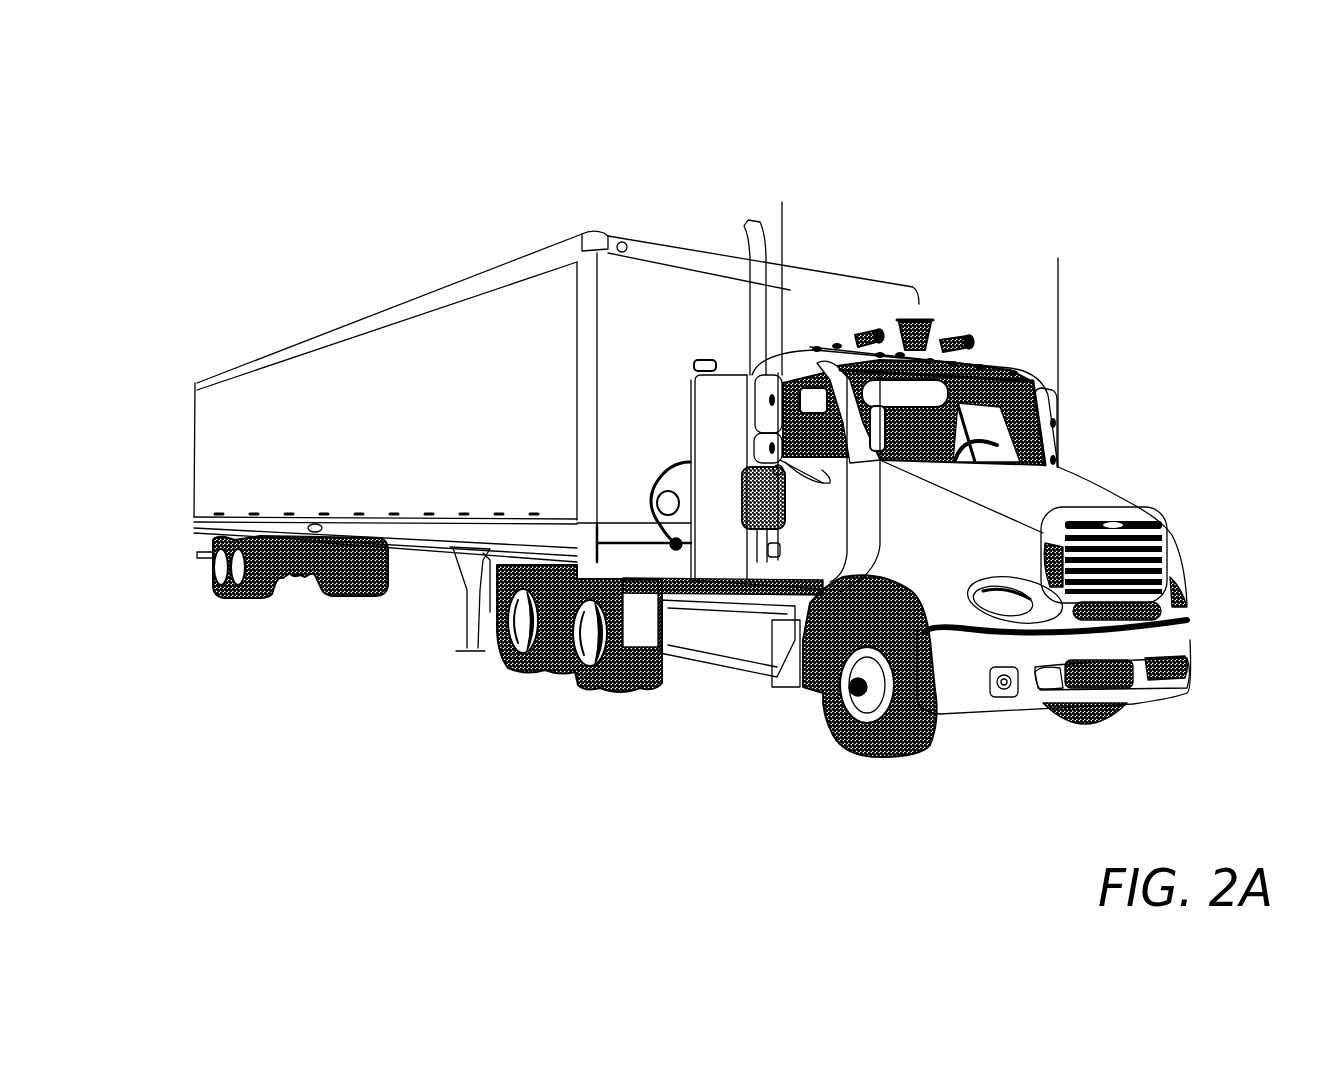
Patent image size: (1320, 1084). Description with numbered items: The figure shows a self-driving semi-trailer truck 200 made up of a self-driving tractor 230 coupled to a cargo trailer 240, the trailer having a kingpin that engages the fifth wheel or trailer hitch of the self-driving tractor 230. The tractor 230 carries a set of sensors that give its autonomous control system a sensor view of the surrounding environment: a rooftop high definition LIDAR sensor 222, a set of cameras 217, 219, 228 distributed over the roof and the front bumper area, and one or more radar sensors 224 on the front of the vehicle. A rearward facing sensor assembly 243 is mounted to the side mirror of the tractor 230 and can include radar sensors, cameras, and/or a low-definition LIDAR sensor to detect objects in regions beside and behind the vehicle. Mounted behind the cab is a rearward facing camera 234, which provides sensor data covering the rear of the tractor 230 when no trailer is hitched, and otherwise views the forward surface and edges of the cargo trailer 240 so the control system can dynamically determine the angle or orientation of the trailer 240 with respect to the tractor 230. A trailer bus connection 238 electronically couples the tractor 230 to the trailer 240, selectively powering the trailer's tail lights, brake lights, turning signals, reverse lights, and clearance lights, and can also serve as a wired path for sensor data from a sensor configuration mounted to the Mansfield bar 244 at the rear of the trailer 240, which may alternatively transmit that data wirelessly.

The self-driving semi-trailer truck 200 is at (845, 134).
The camera 217 is at (873, 327).
The camera 219 is at (958, 337).
The rooftop high definition LIDAR sensor 222 is at (910, 320).
The radar sensor 224 is at (1000, 690).
The camera 228 is at (1192, 722).
The self-driving tractor 230 is at (1192, 533).
The rearward facing camera 234 is at (705, 358).
The trailer bus connection 238 is at (650, 477).
The cargo trailer 240 is at (515, 461).
The rearward facing sensor assembly 243 is at (762, 497).
The Mansfield bar 244 is at (197, 556).